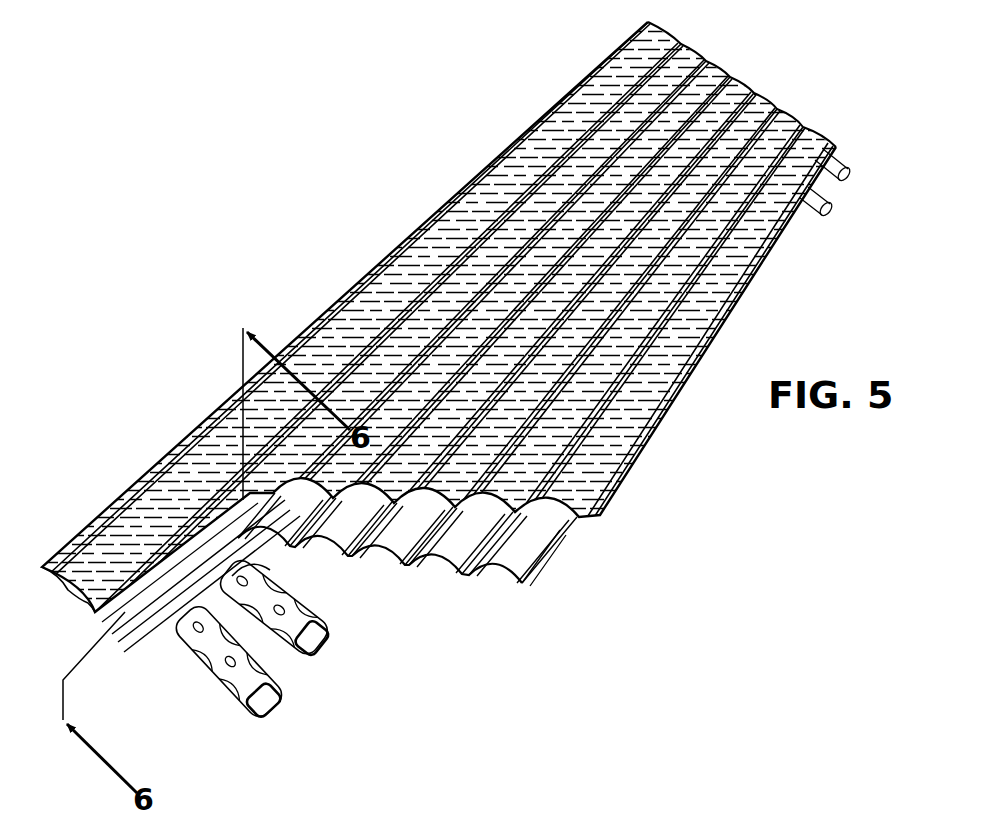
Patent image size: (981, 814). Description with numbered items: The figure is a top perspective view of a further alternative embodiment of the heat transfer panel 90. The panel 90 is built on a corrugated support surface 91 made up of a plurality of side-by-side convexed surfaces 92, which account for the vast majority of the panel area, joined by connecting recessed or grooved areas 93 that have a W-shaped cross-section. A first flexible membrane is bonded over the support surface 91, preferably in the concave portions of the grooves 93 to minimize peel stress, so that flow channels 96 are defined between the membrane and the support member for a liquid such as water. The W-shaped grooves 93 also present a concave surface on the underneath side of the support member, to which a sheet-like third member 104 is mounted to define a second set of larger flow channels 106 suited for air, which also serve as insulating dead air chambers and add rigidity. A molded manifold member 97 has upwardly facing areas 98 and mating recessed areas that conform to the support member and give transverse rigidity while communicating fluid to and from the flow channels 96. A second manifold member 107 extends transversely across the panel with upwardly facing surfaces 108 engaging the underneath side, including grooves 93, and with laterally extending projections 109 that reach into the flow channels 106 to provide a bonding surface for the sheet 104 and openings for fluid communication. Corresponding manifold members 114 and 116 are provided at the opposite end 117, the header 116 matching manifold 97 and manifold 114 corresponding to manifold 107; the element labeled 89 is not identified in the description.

The hinge pin 89 is at (280, 722).
The panel 90 is at (650, 478).
The corrugated support surface 91 is at (140, 628).
The convexed surfaces 92 is at (122, 552).
The grooved areas 93 is at (97, 614).
The flow channels 96 is at (524, 512).
The manifold member 97 is at (250, 735).
The upwardly facing areas 98 is at (228, 698).
The third member 104 is at (415, 518).
The second set of flow channels 106 is at (512, 575).
The second manifold member 107 is at (300, 690).
The upwardly facing surfaces 108 is at (312, 642).
The laterally extending projections 109 is at (248, 566).
The manifold member 114 is at (812, 210).
The manifold member 116 is at (834, 168).
The end 117 is at (756, 88).